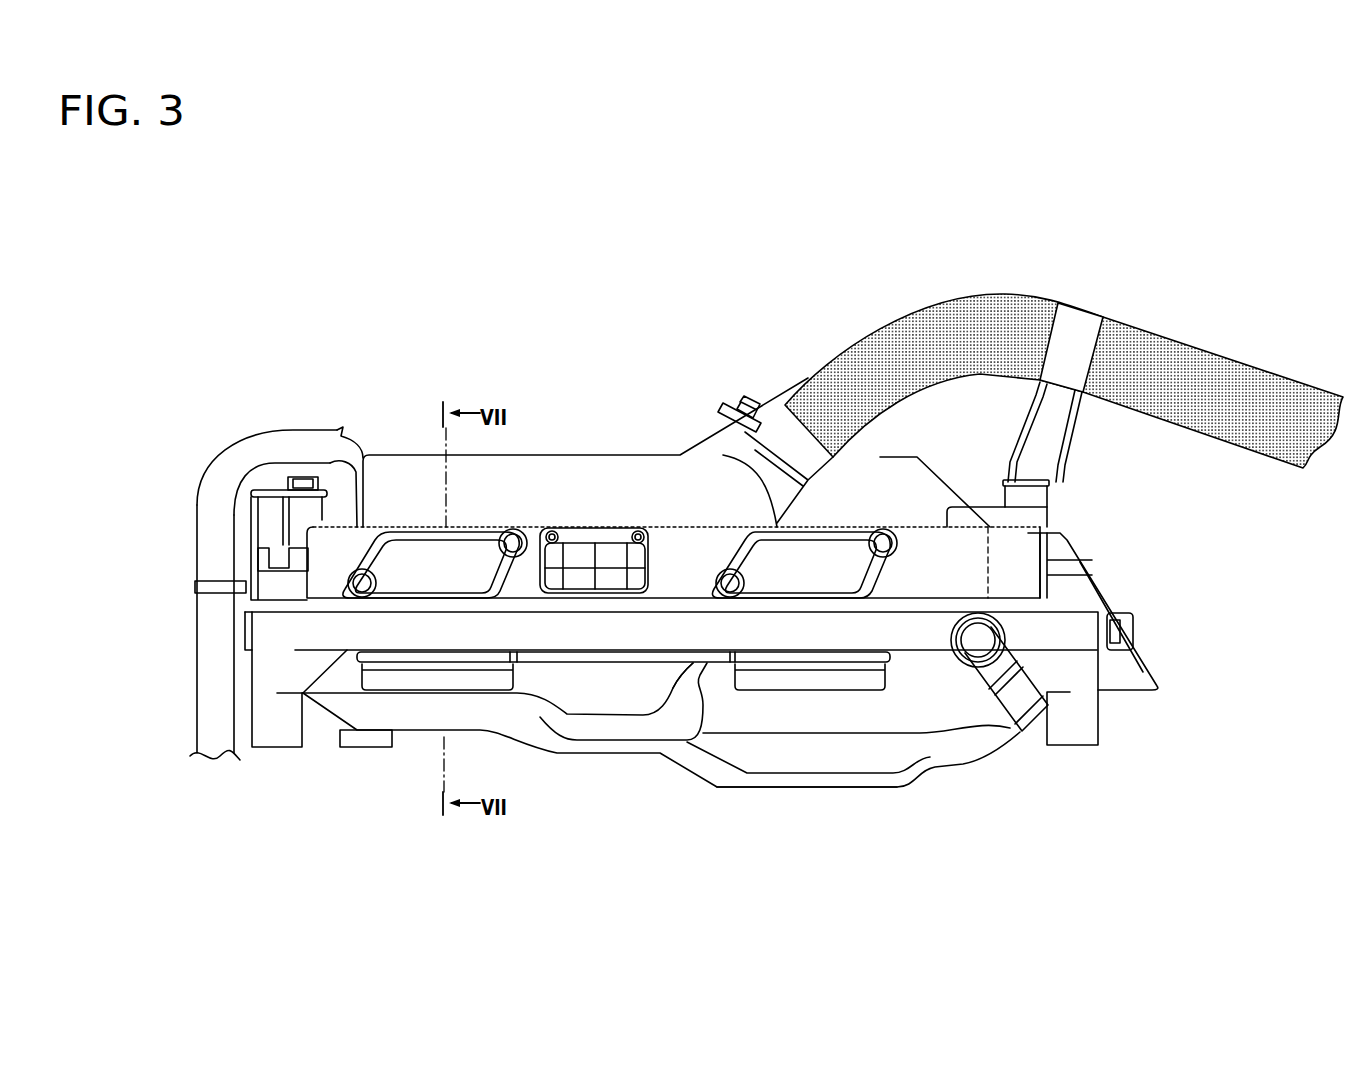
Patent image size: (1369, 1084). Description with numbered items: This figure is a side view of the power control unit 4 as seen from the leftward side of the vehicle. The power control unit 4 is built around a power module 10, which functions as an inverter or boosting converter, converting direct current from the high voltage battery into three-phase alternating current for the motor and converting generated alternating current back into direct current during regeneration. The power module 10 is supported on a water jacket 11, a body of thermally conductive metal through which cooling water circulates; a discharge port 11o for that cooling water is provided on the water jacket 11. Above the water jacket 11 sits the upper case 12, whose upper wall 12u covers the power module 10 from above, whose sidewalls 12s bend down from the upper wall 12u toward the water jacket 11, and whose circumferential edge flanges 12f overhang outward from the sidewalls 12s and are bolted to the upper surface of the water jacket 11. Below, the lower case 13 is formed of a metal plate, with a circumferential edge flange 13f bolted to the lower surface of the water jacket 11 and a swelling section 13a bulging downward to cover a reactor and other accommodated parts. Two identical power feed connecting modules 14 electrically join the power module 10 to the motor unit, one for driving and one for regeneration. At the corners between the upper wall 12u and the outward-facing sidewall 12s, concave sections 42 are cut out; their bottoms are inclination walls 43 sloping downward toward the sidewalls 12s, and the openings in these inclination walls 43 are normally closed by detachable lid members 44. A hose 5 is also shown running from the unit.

The power control unit 4 is at (639, 338).
The hose 5 is at (1145, 332).
The power module 10 is at (425, 518).
The water jacket 11 is at (357, 640).
The discharge port 11o is at (1023, 693).
The upper case 12 is at (518, 445).
The upper wall 12u is at (677, 570).
The sidewall 12s is at (282, 542).
The circumferential edge flange 12f is at (555, 663).
The lower case 13 is at (608, 767).
The swelling section 13a is at (837, 788).
The circumferential edge flange 13f is at (676, 663).
The power feed connecting module 14 is at (427, 693).
The concave section 42 is at (355, 548).
The inclination wall 43 is at (552, 607).
The lid member 44 is at (385, 543).